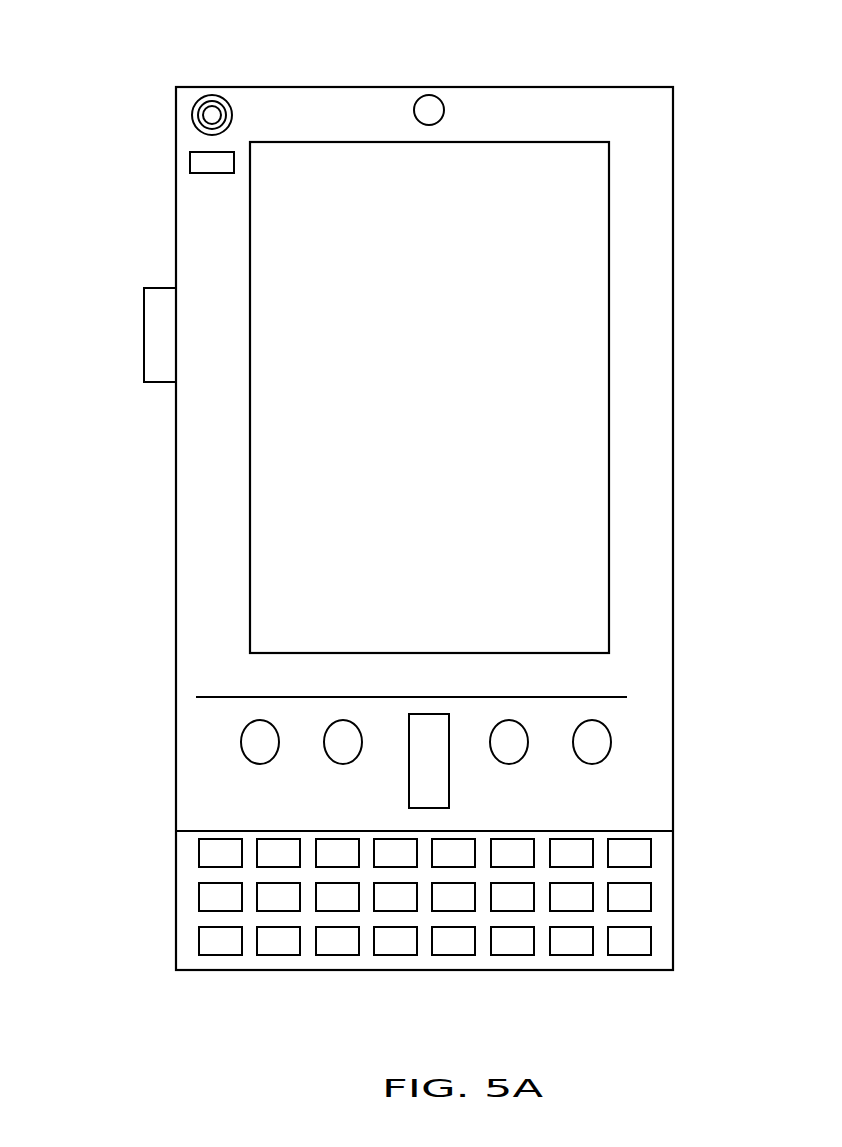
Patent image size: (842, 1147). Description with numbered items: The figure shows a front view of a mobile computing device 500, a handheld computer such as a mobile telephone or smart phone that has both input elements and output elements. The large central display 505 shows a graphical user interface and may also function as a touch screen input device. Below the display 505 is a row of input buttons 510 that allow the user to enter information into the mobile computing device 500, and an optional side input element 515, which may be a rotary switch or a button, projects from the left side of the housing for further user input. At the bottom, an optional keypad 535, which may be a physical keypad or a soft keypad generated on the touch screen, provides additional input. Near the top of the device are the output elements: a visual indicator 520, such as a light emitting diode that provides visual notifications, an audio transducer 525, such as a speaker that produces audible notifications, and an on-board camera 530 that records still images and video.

The mobile computing device 500 is at (660, 105).
The display 505 is at (360, 565).
The input buttons 510 is at (430, 762).
The side input element 515 is at (144, 337).
The visual indicator 520 is at (190, 168).
The audio transducer 525 is at (192, 115).
The on-board camera 530 is at (440, 110).
The keypad 535 is at (185, 945).